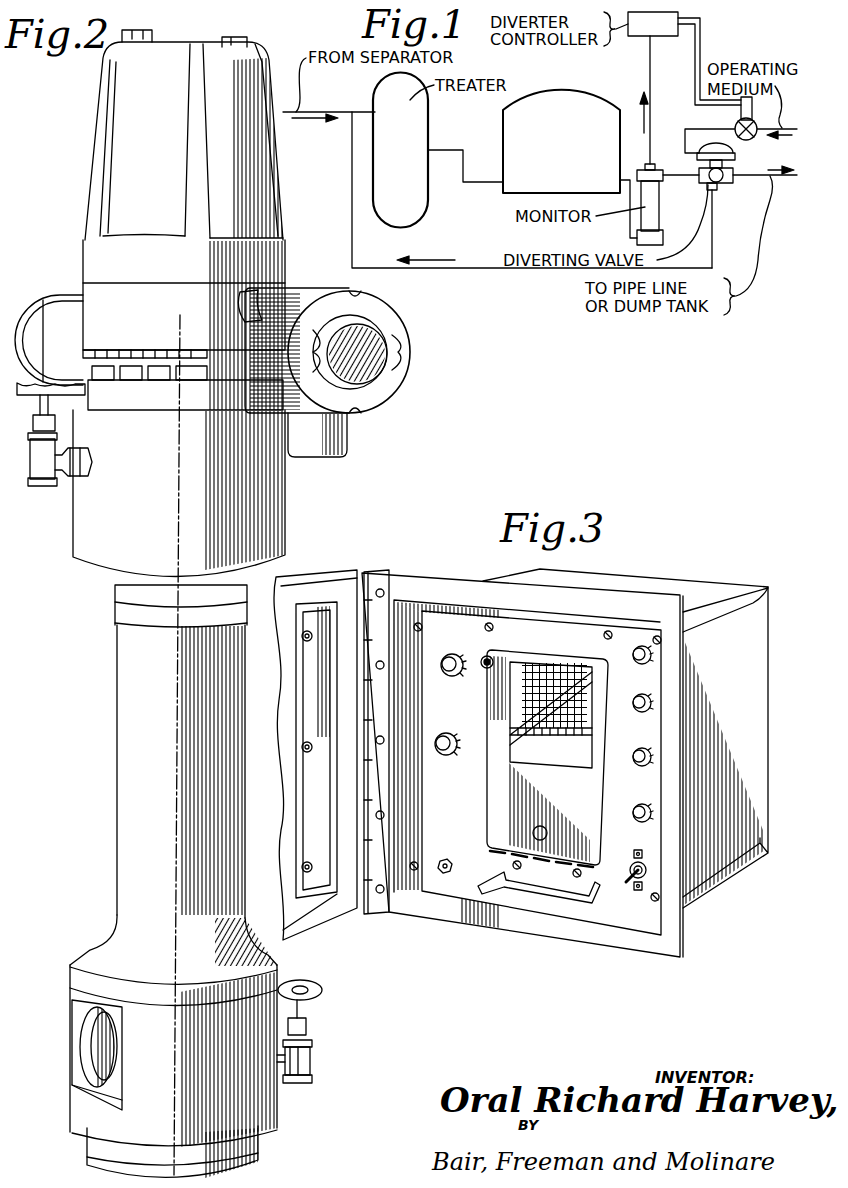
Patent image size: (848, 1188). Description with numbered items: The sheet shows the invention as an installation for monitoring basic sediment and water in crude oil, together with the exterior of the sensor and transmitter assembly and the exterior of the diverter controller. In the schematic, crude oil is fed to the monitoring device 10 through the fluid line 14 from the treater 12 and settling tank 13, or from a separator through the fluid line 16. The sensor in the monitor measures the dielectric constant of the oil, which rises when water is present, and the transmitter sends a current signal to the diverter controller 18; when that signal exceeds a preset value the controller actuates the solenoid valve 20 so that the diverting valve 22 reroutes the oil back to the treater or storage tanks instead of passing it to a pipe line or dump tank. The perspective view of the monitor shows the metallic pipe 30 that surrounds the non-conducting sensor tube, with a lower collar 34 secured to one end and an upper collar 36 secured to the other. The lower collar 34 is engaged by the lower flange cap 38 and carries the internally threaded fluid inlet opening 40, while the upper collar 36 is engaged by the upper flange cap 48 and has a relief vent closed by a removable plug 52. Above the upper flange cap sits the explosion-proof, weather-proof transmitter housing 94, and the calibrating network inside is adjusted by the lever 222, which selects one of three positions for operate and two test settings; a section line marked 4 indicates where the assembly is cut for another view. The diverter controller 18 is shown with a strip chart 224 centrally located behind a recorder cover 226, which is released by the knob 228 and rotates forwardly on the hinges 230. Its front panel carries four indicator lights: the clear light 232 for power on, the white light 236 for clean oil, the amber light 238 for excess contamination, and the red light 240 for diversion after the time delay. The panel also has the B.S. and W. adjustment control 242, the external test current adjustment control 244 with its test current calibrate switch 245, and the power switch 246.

In FIG. 1, the monitoring device 10 is at (654, 198).
In FIG. 2, the monitoring device 10 is at (212, 608).
In FIG. 1, the treater 12 is at (423, 128).
In FIG. 1, the settling tank 13 is at (562, 110).
In FIG. 1, the fluid line 14 is at (628, 227).
In FIG. 1, the fluid line 16 is at (330, 112).
In FIG. 1, the diverter controller 18 is at (643, 40).
In FIG. 3, the diverter controller 18 is at (521, 749).
In FIG. 1, the solenoid valve 20 is at (740, 110).
In FIG. 1, the diverting valve 22 is at (717, 180).
In FIG. 2, the metallic pipe 30 is at (133, 812).
In FIG. 2, the lower collar 34 is at (250, 975).
In FIG. 2, the upper collar 36 is at (100, 562).
In FIG. 2, the lower flange cap 38 is at (97, 1156).
In FIG. 2, the fluid inlet opening 40 is at (90, 1040).
In FIG. 2, the upper flange cap 48 is at (122, 392).
In FIG. 2, the plug 52 is at (62, 485).
In FIG. 2, the transmitter housing 94 is at (120, 188).
In FIG. 2, the lever 222 is at (103, 352).
In FIG. 3, the strip chart 224 is at (565, 678).
In FIG. 3, the recorder cover 226 is at (493, 777).
In FIG. 3, the knob 228 is at (484, 655).
In FIG. 3, the hinges 230 is at (565, 867).
In FIG. 3, the light 232 is at (645, 805).
In FIG. 3, the light 236 is at (645, 750).
In FIG. 3, the light 238 is at (648, 688).
In FIG. 3, the light 240 is at (648, 640).
In FIG. 3, the B.S. and W. adjustment control 242 is at (445, 677).
In FIG. 3, the external test current adjustment control 244 is at (438, 756).
In FIG. 3, the test current calibrate switch 245 is at (446, 858).
In FIG. 3, the power switch 246 is at (636, 886).
In FIG. 2, the section line 4 is at (212, 331).